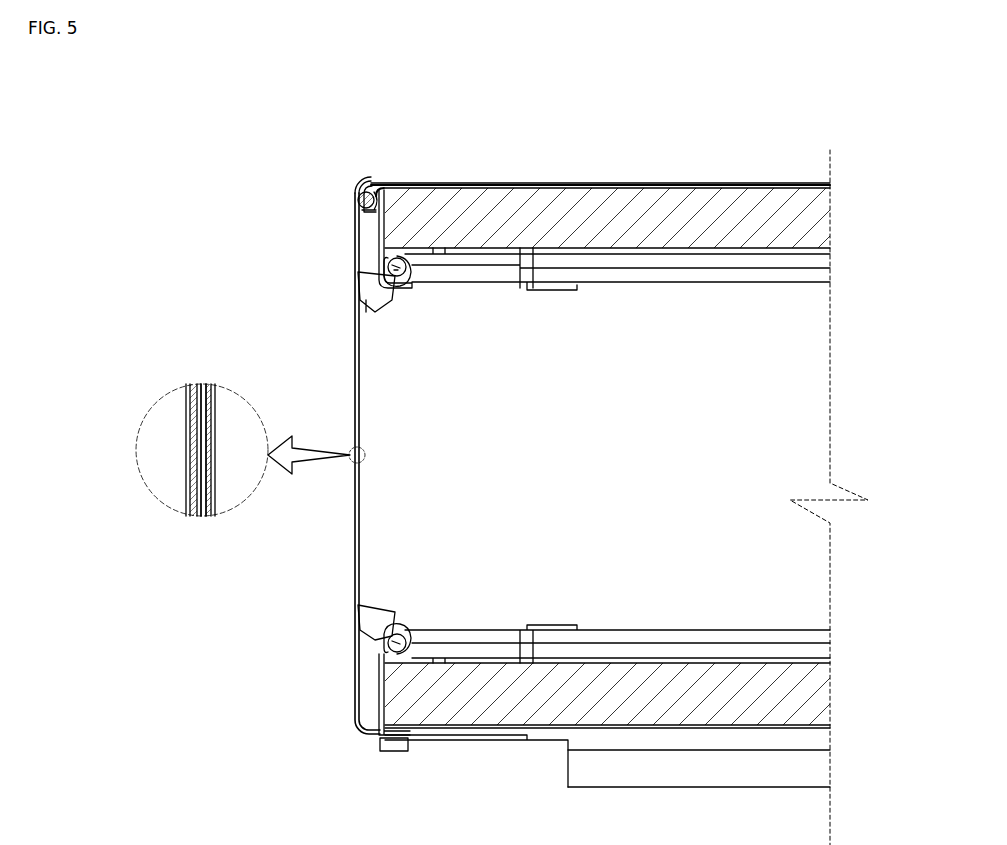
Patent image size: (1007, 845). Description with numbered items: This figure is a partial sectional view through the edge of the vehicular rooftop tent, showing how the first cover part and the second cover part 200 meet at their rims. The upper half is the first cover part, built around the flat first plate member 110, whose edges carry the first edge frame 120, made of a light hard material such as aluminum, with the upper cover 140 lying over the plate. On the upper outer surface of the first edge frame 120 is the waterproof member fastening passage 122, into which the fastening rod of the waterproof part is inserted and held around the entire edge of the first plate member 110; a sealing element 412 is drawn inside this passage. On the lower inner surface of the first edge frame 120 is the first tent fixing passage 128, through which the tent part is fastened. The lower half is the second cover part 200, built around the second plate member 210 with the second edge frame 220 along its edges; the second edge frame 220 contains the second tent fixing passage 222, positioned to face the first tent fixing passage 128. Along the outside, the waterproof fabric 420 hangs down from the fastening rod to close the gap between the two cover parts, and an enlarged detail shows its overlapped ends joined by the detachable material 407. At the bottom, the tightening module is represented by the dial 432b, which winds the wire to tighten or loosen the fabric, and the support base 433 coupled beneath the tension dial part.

The first plate member 110 is at (533, 207).
The first edge frame 120 is at (400, 190).
The waterproof member fastening passage 122 is at (358, 183).
The first tent fixing passage 128 is at (398, 288).
The upper cover 140 is at (378, 190).
The second cover part 200 is at (674, 648).
The second plate member 210 is at (652, 708).
The second edge frame 220 is at (380, 738).
The second tent fixing passage 222 is at (405, 645).
The detachable material 407 is at (198, 462).
The gasket 412 is at (356, 204).
The waterproof fabric 420 is at (188, 434).
The dial 432b is at (396, 752).
The support base 433 is at (415, 742).